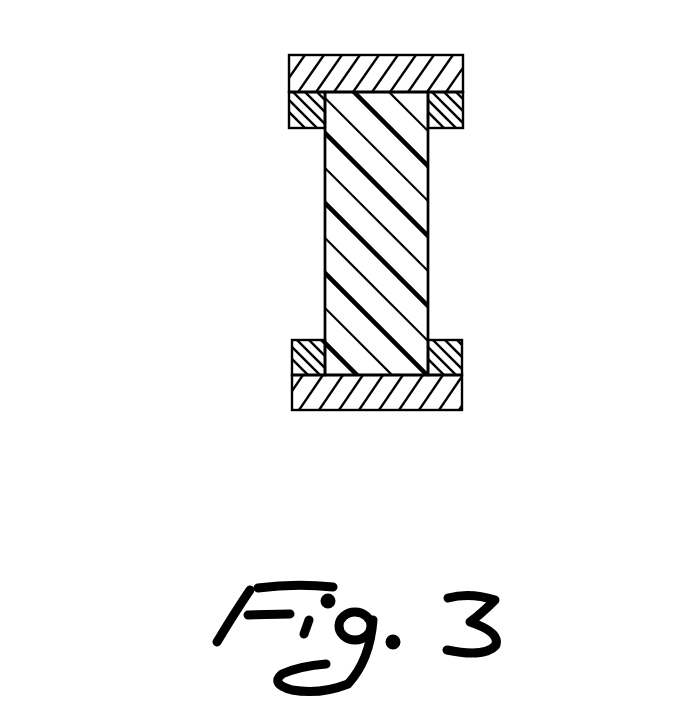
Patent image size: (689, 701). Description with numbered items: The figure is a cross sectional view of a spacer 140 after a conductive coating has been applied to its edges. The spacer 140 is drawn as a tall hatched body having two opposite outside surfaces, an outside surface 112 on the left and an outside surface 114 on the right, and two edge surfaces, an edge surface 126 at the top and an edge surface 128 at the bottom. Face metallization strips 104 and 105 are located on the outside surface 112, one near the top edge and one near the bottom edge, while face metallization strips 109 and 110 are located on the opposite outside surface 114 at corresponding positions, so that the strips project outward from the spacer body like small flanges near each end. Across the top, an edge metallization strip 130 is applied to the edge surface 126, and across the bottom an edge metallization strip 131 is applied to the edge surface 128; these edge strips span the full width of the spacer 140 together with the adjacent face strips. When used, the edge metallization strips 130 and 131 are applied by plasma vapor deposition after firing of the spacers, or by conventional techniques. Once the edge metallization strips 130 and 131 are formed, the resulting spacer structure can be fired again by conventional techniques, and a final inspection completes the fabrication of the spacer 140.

The spacer 140 is at (183, 206).
The edge metallization strip 130 is at (440, 72).
The edge metallization strip 131 is at (447, 404).
The face metallization strip 104 is at (296, 113).
The face metallization strip 109 is at (452, 113).
The face metallization strip 105 is at (298, 357).
The face metallization strip 110 is at (450, 358).
The outside surface 112 is at (322, 233).
The outside surface 114 is at (431, 238).
The edge surface 126 is at (342, 86).
The edge surface 128 is at (330, 386).